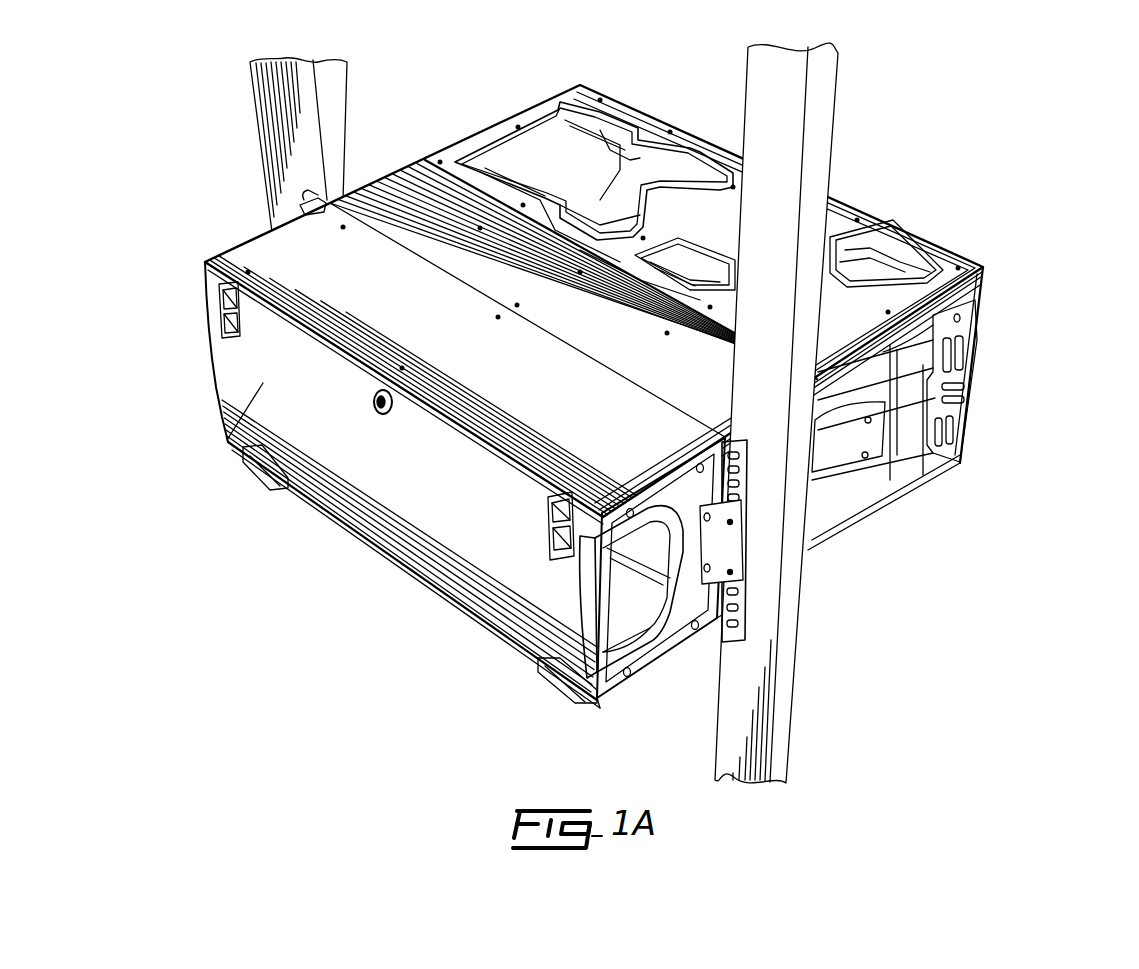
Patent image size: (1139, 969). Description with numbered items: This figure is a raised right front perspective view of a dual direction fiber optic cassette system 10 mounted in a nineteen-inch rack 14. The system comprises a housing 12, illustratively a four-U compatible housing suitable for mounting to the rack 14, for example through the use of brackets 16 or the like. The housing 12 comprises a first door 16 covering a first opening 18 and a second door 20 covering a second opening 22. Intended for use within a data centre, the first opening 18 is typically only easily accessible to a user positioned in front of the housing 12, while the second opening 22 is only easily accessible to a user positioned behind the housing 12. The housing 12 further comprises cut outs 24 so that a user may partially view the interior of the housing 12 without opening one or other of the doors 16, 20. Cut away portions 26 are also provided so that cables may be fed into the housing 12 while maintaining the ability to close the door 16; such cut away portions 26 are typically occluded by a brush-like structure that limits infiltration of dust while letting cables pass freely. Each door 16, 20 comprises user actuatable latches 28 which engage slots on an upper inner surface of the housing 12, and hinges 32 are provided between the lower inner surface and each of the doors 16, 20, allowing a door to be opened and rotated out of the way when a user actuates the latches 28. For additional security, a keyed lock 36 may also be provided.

The dual direction fiber optic cassette system 10 is at (576, 404).
The housing 12 is at (637, 413).
The rack 14 is at (825, 90).
The first door 16 is at (502, 485).
The first opening 18 is at (483, 440).
The second door 20 is at (980, 320).
The second opening 22 is at (629, 271).
The cut outs 24 is at (598, 136).
The cut away portions 26 is at (618, 603).
The user actuatable latches 28 is at (218, 287).
The hinges 32 is at (275, 484).
The keyed lock 36 is at (375, 407).